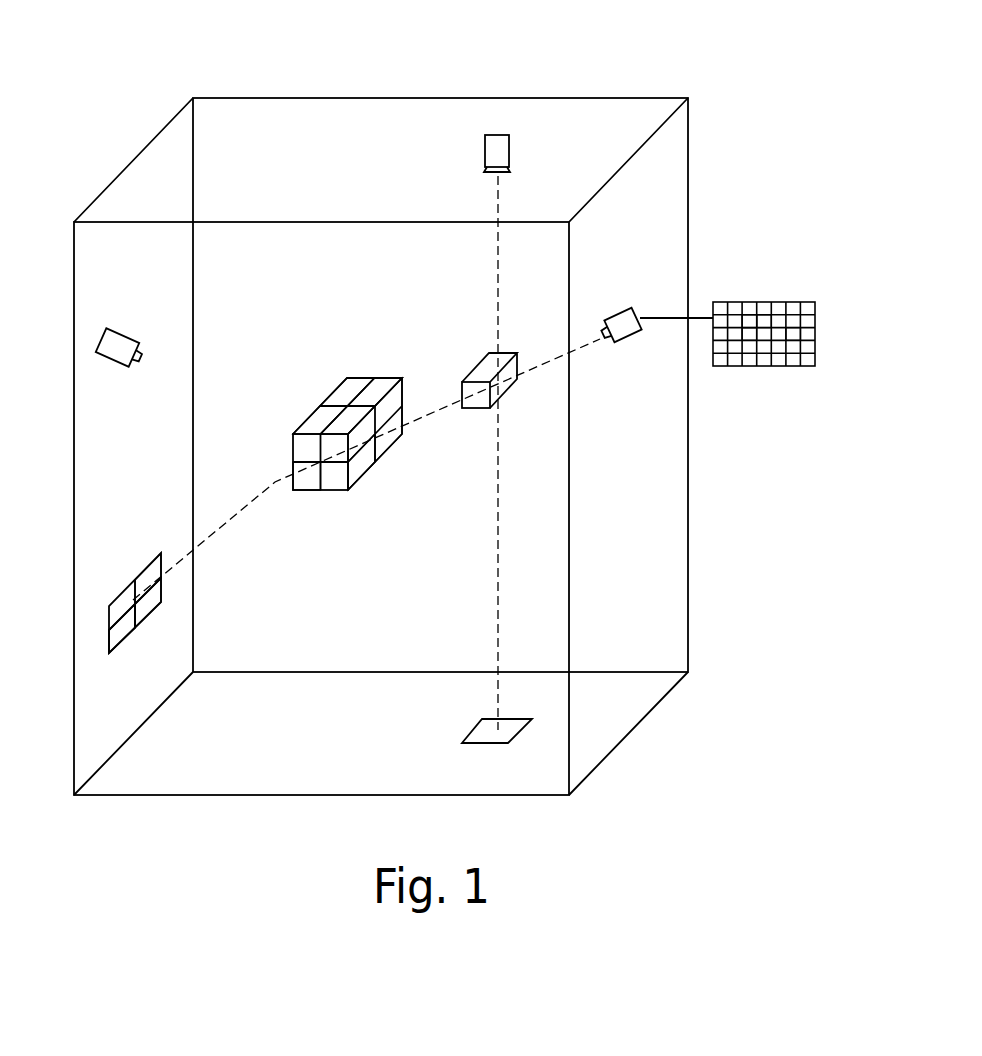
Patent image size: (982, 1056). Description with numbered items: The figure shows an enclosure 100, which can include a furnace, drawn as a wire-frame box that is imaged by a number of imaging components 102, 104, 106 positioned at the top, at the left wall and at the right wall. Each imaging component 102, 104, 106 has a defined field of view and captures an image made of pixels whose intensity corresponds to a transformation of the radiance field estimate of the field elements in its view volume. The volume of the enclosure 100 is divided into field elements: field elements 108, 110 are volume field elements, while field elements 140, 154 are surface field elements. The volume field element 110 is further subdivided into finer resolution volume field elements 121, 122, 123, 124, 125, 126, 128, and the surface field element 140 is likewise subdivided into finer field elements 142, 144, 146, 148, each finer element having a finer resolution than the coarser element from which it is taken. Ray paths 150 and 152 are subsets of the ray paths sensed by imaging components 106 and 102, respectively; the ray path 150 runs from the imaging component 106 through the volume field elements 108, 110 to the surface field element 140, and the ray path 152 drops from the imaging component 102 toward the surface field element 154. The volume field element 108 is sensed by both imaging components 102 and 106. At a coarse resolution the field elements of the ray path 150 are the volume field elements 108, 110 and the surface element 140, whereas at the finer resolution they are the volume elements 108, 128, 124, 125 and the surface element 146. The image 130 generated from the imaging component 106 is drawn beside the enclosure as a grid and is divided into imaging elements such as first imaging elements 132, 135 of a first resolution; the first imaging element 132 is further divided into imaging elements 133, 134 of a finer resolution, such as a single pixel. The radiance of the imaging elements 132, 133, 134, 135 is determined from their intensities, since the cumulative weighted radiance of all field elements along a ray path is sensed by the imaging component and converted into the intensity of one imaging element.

The enclosure 100 is at (444, 71).
The imaging component 102 is at (498, 148).
The imaging component 104 is at (119, 338).
The imaging component 106 is at (622, 328).
The volume field element 108 is at (508, 351).
The volume field element 110 is at (359, 371).
The finer resolution volume field element 121 is at (350, 396).
The finer resolution volume field element 122 is at (380, 389).
The finer resolution volume field element 123 is at (319, 422).
The finer resolution volume field element 124 is at (346, 420).
The finer resolution volume field element 125 is at (310, 477).
The finer resolution volume field element 126 is at (358, 472).
The finer resolution volume field element 128 is at (387, 443).
The image 130 is at (725, 298).
The first imaging element 132 is at (749, 318).
The second imaging element 133 is at (753, 322).
The second imaging element 134 is at (764, 320).
The first imaging element 135 is at (793, 338).
The surface field element 140 is at (134, 563).
The finer field element 142 is at (115, 612).
The finer field element 144 is at (122, 631).
The finer field element 146 is at (145, 607).
The finer field element 148 is at (158, 572).
The ray path 150 is at (250, 501).
The ray path 152 is at (499, 552).
The surface field element 154 is at (480, 749).